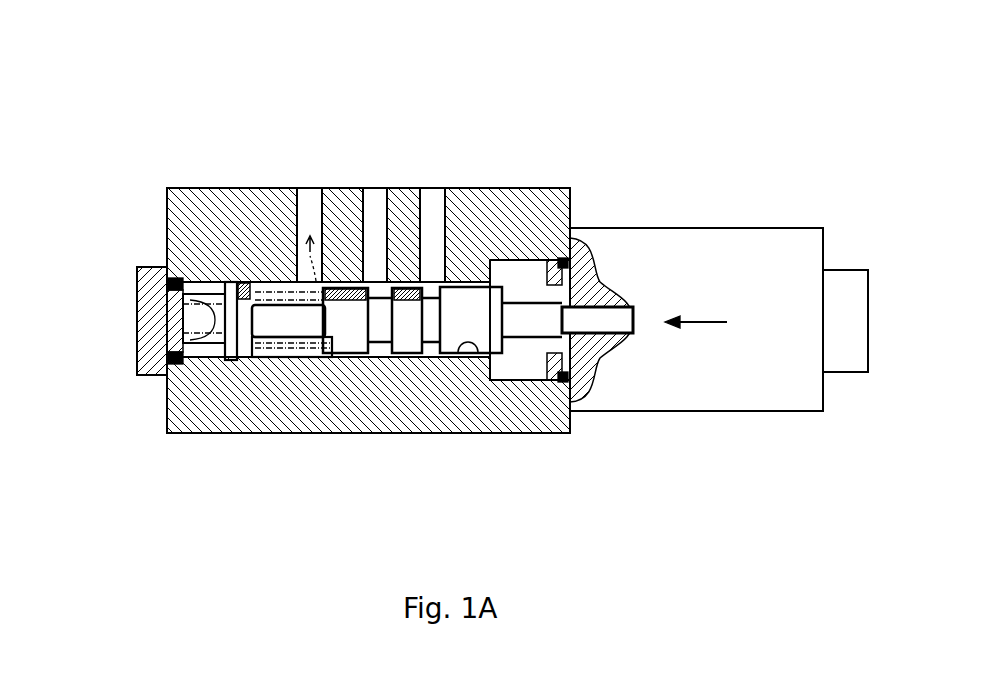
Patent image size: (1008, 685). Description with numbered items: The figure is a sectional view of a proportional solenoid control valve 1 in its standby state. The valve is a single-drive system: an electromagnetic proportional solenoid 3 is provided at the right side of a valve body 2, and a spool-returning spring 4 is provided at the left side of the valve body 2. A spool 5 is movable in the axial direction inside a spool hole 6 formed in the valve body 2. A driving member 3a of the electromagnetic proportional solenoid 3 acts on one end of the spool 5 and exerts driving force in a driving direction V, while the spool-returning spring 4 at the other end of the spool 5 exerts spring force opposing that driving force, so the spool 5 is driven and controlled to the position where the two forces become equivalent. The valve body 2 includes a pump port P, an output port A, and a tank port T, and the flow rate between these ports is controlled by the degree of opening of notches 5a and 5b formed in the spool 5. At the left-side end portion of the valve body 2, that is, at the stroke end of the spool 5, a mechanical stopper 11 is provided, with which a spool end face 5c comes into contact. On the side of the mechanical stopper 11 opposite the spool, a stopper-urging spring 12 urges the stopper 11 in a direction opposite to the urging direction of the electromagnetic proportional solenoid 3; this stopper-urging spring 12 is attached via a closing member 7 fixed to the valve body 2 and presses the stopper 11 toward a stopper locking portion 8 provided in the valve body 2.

The proportional solenoid control valve 1 is at (660, 90).
The valve body 2 is at (499, 195).
The electromagnetic proportional solenoid 3 is at (708, 242).
The driving member 3a is at (593, 320).
The spool-returning spring 4 is at (290, 340).
The spool 5 is at (343, 346).
The notch 5a is at (405, 287).
The notch 5b is at (346, 287).
The spool end face 5c is at (246, 288).
The spool hole 6 is at (472, 366).
The closing member 7 is at (150, 292).
The stopper locking portion 8 is at (248, 302).
The mechanical stopper 11 is at (222, 358).
The stopper-urging spring 12 is at (186, 318).
The tank port T is at (310, 200).
The output port A is at (380, 272).
The pump port P is at (431, 272).
The driving direction V is at (700, 323).